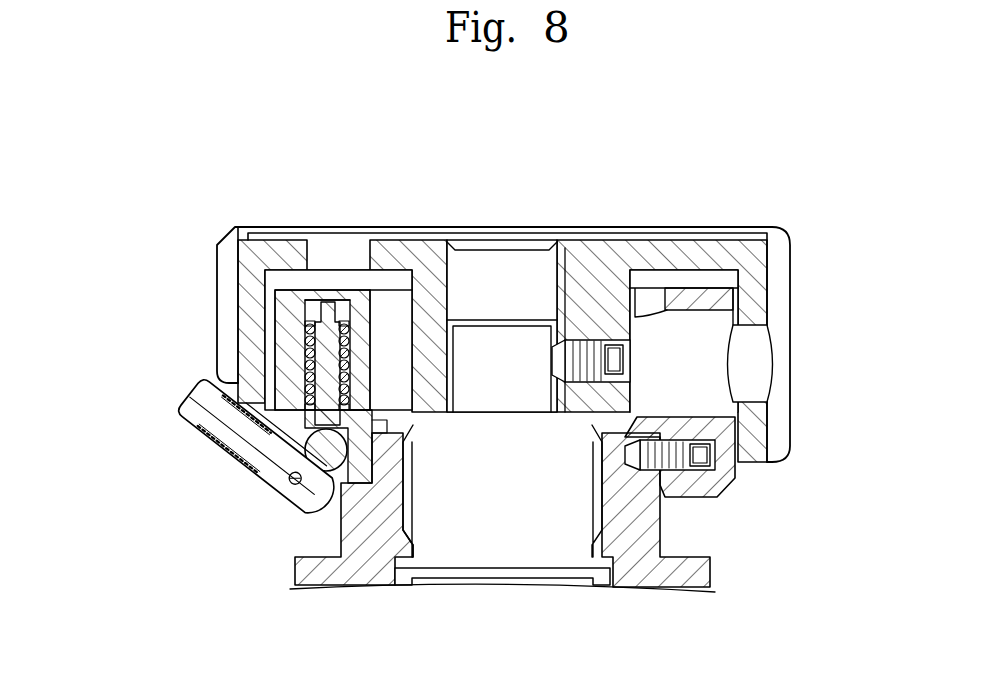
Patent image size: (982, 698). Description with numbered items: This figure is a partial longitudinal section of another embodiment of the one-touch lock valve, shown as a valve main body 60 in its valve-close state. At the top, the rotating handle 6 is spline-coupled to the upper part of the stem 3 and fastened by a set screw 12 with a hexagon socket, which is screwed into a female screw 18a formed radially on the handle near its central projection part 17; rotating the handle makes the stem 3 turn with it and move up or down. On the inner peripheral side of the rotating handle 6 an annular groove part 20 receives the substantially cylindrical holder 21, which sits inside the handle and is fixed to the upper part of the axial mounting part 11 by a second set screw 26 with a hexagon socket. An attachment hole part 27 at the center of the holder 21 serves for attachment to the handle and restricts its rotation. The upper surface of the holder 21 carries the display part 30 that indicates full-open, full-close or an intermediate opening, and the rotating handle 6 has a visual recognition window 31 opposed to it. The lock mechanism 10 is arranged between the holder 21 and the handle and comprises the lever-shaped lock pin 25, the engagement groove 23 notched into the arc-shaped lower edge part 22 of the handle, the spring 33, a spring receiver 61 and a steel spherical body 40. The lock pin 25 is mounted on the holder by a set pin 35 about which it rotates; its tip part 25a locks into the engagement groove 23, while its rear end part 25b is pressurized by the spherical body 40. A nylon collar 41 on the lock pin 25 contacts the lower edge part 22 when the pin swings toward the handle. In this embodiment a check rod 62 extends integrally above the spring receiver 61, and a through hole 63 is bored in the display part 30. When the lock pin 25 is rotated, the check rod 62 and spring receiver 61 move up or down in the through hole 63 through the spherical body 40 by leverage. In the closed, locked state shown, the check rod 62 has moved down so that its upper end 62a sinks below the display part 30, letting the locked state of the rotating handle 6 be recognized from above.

The stem 3 is at (502, 539).
The rotating handle 6 is at (503, 293).
The lock mechanism 10 is at (261, 475).
The axial mounting part 11 is at (542, 510).
The set screw 12 is at (707, 348).
The projection part 17 is at (502, 293).
The female screw 18a is at (742, 366).
The annular groove part 20 is at (744, 325).
The holder 21 is at (765, 365).
The lower edge part 22 is at (745, 457).
The engagement groove 23 is at (194, 422).
The lock pin 25 is at (156, 426).
The tip part 25a is at (151, 366).
The rear end part 25b is at (329, 541).
The set screw 26 is at (745, 488).
The attachment hole part 27 is at (474, 268).
The display part 30 is at (338, 267).
The visual recognition window 31 is at (330, 253).
The spring 33 is at (242, 289).
The set pin 35 is at (258, 555).
The spherical body 40 is at (322, 532).
The collar 41 is at (161, 460).
The valve main body 60 is at (559, 584).
The spring receiver 61 is at (206, 513).
The check rod 62 is at (241, 365).
The upper end 62a is at (335, 292).
The through hole 63 is at (379, 267).